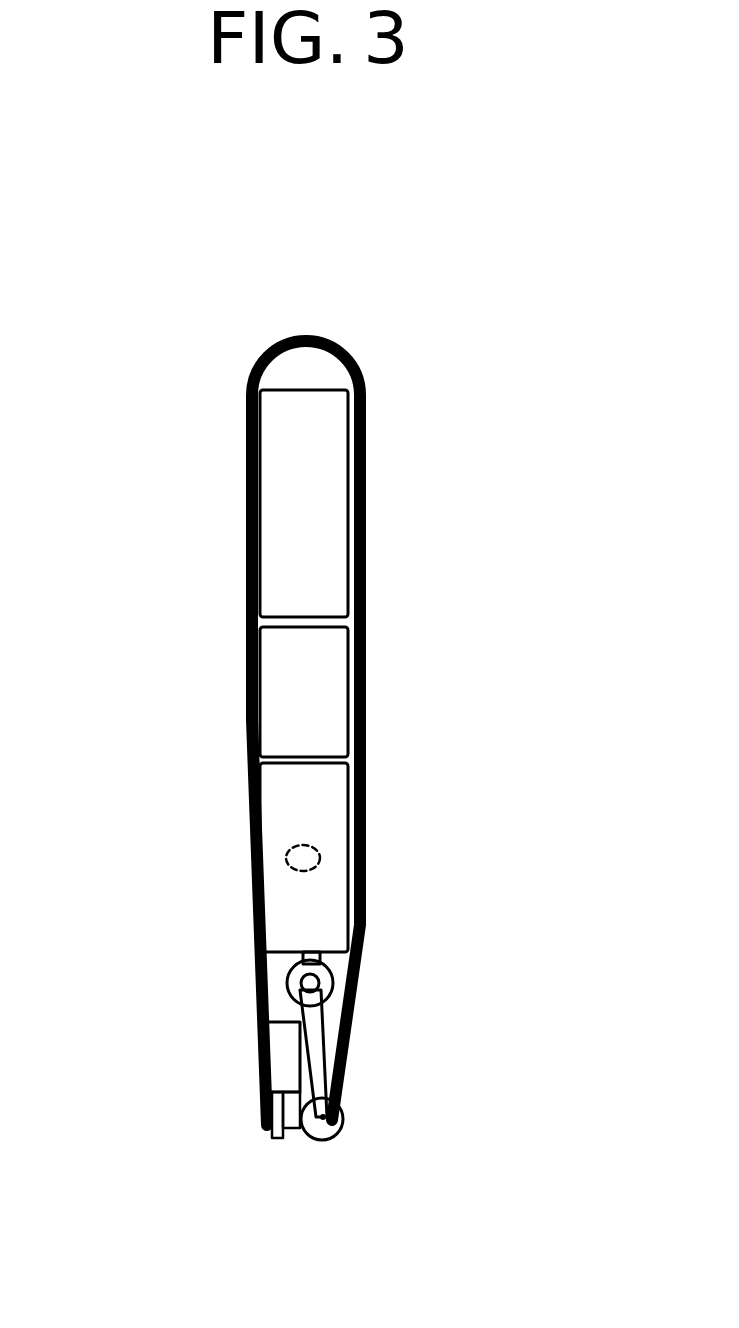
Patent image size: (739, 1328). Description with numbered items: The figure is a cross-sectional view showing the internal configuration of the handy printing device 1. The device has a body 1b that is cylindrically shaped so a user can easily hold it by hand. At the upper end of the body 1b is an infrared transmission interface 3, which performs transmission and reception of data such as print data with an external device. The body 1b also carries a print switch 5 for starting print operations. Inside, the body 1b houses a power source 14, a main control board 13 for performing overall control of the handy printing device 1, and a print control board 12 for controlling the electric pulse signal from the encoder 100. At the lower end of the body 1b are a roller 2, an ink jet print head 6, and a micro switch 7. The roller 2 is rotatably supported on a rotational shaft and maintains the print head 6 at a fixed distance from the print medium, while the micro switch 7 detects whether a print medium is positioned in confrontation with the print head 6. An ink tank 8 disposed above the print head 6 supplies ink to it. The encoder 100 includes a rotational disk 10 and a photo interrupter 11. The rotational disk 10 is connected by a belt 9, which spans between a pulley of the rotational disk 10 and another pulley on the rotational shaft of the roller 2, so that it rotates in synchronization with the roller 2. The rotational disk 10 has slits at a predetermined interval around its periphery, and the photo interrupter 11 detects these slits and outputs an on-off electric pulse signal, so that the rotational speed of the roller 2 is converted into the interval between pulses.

The handy printing device 1 is at (125, 206).
The body 1b is at (247, 612).
The infrared transmission interface 3 is at (323, 370).
The main control board 13 is at (337, 520).
The power source 14 is at (340, 698).
The print control board 12 is at (345, 903).
The print switch 5 is at (320, 856).
The encoder 100 is at (464, 994).
The photo interrupter 11 is at (322, 960).
The rotational disk 10 is at (333, 983).
The belt 9 is at (343, 1035).
The roller 2 is at (333, 1132).
The ink tank 8 is at (277, 1063).
The micro switch 7 is at (282, 1138).
The ink jet print head 6 is at (297, 1137).